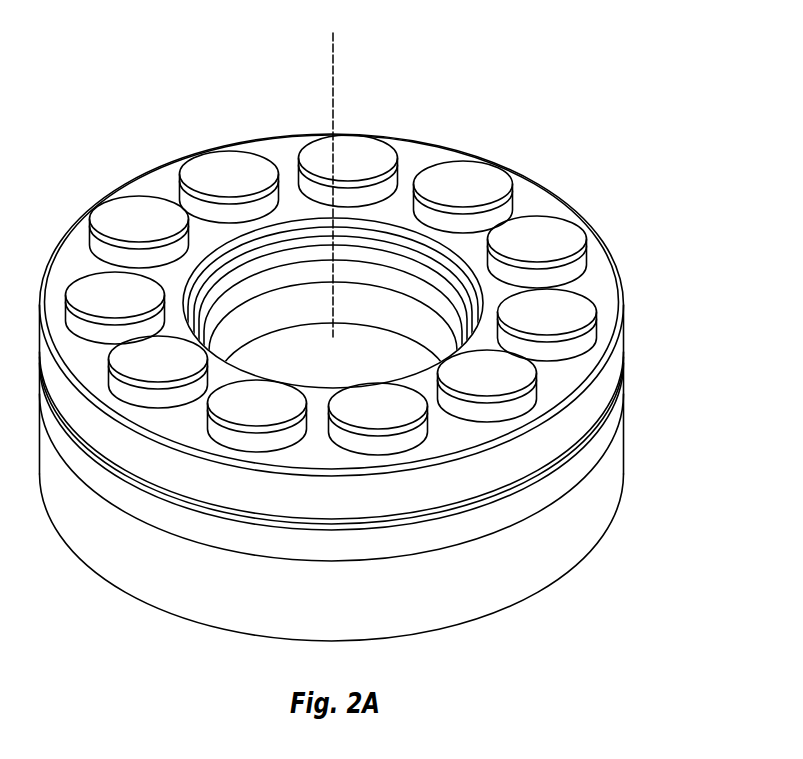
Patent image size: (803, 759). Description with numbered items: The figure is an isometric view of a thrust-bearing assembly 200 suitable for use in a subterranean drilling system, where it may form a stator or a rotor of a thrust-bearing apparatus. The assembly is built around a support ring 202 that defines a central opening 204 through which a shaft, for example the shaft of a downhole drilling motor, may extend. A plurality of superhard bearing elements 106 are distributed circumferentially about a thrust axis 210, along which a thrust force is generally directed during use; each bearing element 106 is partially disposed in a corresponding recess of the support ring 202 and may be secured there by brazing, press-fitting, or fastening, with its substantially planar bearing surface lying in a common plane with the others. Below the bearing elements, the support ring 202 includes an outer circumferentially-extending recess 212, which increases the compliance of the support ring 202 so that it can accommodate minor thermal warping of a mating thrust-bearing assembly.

The thrust-bearing assembly 200 is at (462, 85).
The support ring 202 is at (636, 455).
The opening 204 is at (348, 352).
The thrust axis 210 is at (334, 53).
The outer circumferentially-extending recess 212 is at (470, 505).
The superhard bearing elements 106 is at (580, 267).